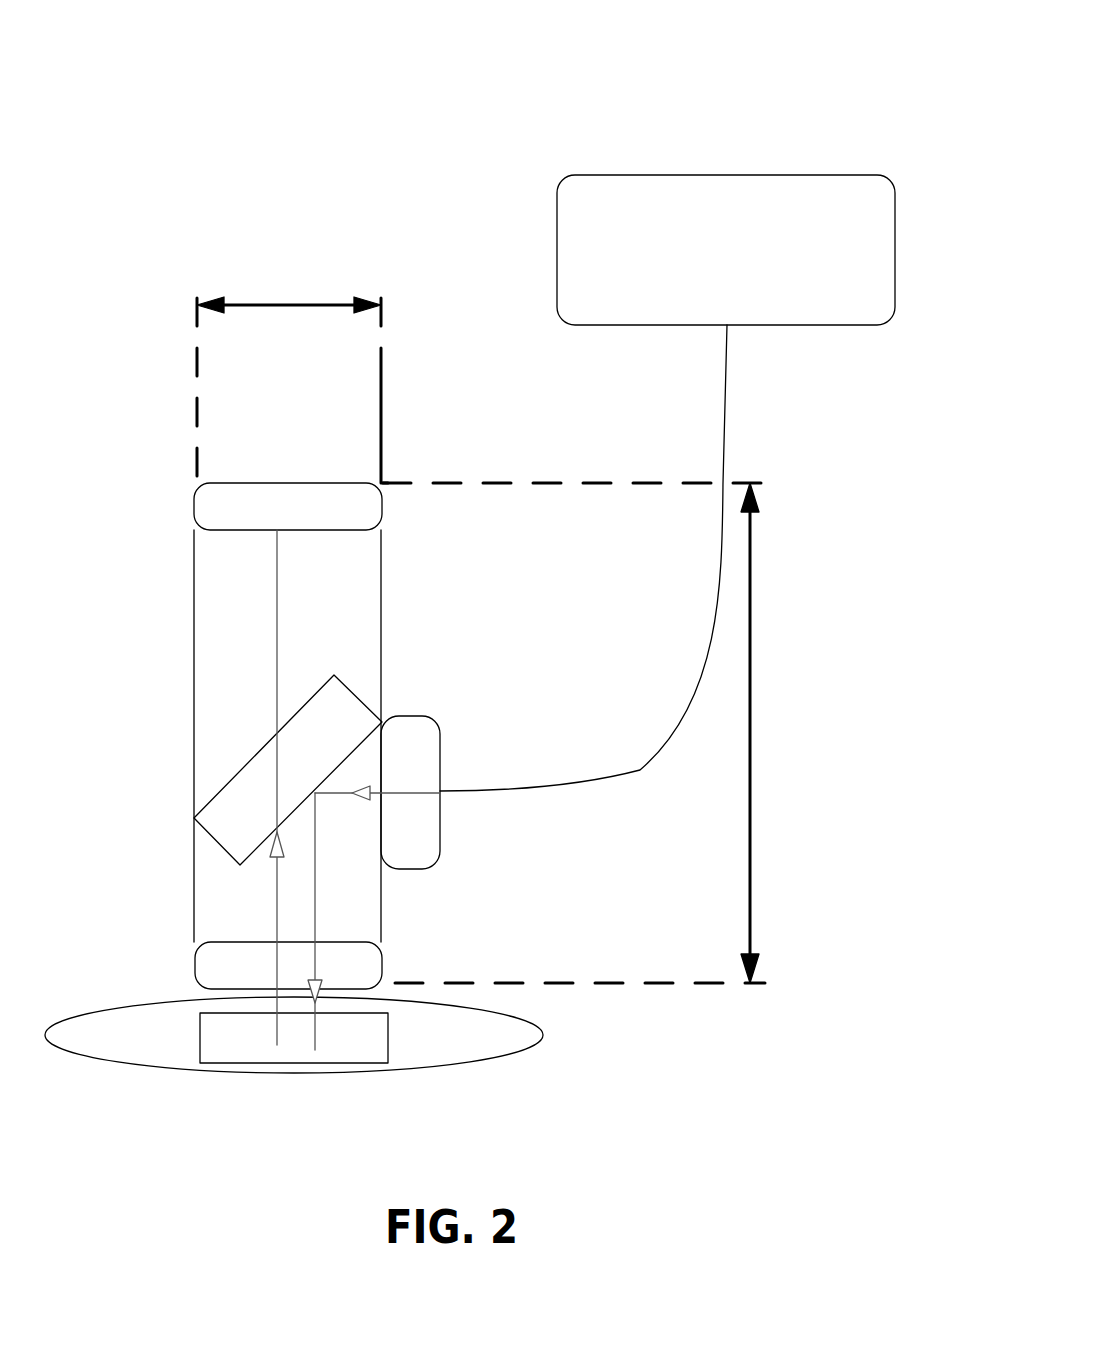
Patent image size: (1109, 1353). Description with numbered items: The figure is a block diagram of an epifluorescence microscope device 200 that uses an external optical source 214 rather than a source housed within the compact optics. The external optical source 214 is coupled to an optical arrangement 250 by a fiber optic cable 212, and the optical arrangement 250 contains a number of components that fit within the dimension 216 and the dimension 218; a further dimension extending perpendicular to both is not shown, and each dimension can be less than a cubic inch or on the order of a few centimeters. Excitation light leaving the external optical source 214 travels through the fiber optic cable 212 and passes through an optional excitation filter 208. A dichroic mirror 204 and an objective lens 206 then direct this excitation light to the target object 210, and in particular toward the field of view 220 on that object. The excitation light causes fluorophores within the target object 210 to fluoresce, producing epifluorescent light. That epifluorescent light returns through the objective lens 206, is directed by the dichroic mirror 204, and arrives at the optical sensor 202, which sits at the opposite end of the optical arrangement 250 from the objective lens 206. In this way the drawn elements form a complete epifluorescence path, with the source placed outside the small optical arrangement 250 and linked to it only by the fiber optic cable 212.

The epifluorescence microscope device 200 is at (660, 96).
The optical sensor 202 is at (247, 485).
The dichroic mirror 204 is at (317, 687).
The objective lens 206 is at (322, 943).
The excitation filter 208 is at (440, 745).
The target object 210 is at (518, 1020).
The fiber optic cable 212 is at (727, 468).
The external optical source 214 is at (805, 170).
The dimension 216 is at (755, 683).
The dimension 218 is at (268, 302).
The field of view 220 is at (382, 1057).
The optical arrangement 250 is at (413, 425).